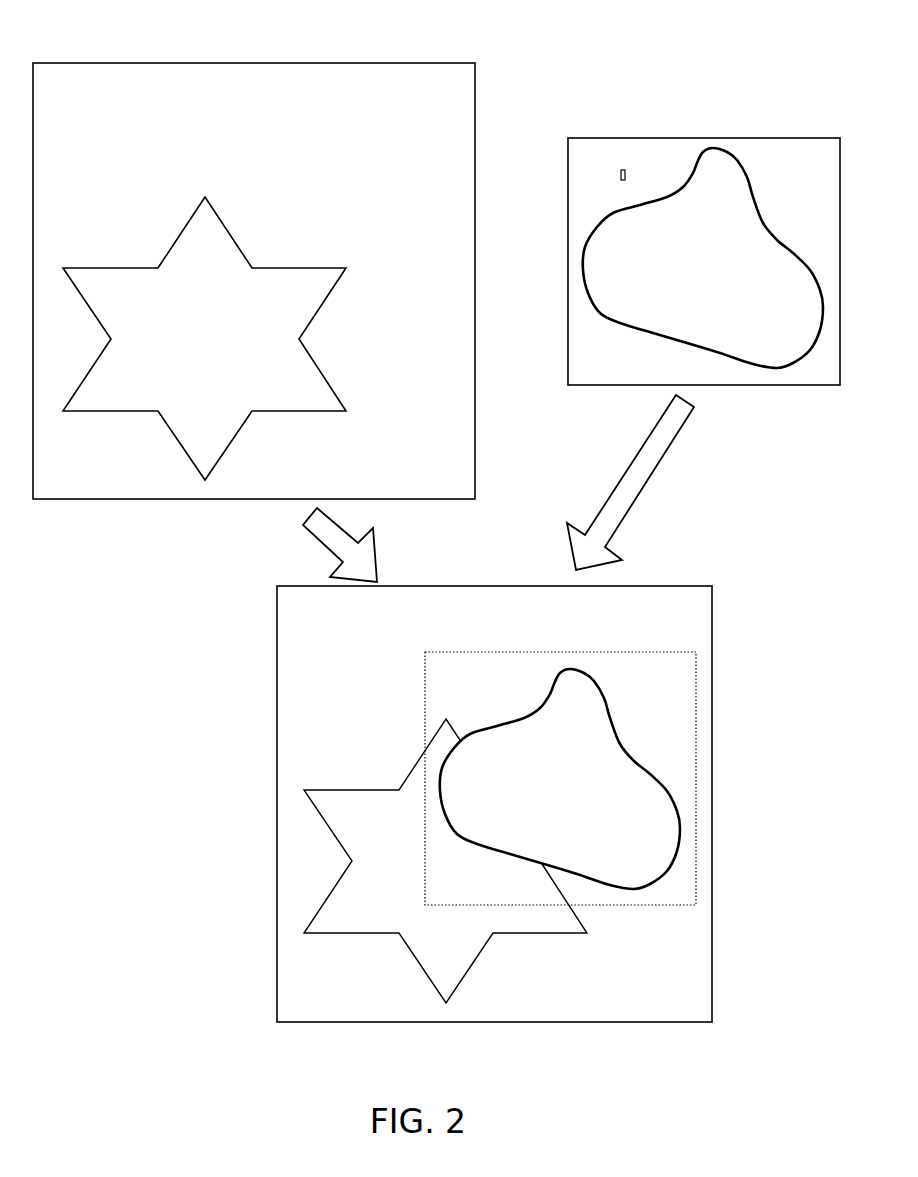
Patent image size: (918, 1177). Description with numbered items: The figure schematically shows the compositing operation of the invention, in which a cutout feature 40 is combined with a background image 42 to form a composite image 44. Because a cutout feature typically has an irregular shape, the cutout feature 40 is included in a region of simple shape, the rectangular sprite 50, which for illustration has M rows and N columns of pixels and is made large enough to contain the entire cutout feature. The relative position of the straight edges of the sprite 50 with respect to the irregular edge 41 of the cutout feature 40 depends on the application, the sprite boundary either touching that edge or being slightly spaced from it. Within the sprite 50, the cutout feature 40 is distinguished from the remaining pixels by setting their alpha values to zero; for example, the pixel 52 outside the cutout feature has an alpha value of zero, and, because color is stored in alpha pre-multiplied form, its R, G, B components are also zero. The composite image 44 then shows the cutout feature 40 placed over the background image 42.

The cutout feature 40 is at (731, 228).
The irregular edge 41 is at (737, 161).
The background image 42 is at (317, 70).
The composite image 44 is at (713, 705).
The sprite 50 is at (698, 138).
The pixel 52 is at (622, 168).